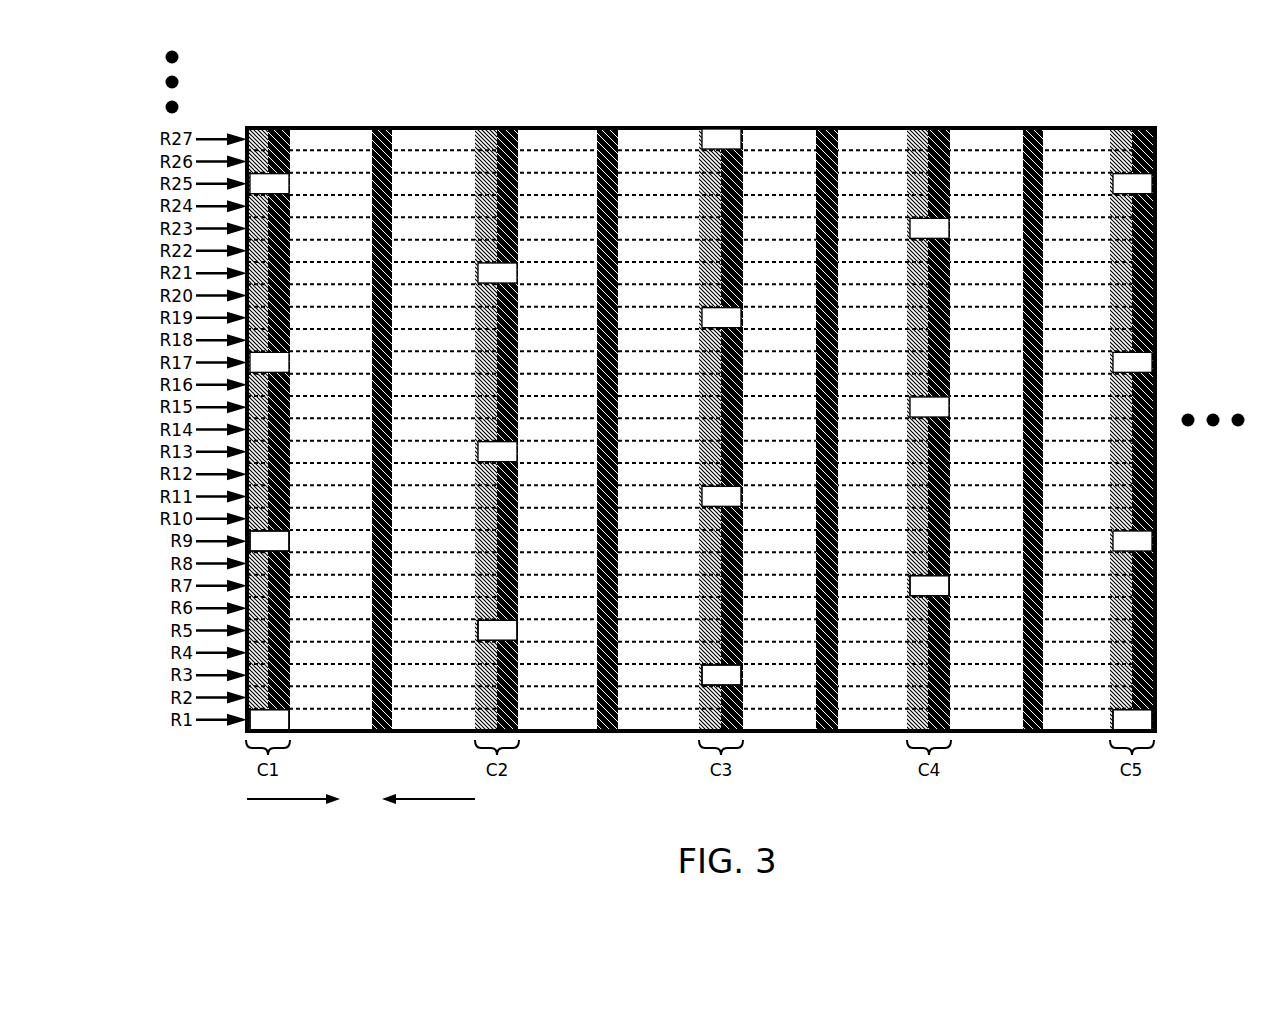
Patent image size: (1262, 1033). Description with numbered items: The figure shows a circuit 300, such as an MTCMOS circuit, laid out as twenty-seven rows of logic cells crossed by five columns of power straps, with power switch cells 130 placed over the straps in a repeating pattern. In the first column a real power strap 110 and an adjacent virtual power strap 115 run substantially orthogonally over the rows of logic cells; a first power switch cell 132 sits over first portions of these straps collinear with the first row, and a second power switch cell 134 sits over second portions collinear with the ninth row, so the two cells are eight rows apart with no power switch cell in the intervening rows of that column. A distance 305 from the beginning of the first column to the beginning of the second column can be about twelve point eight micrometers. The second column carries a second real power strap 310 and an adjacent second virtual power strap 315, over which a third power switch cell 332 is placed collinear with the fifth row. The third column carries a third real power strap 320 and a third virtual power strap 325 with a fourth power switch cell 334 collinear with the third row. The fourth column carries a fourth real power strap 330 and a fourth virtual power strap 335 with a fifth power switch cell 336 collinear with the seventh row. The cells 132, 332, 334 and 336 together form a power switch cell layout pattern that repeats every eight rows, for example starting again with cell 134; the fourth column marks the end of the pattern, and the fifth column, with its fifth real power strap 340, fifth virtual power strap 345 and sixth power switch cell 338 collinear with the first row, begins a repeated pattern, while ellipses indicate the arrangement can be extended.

The real power strap 110 is at (258, 112).
The virtual power strap 115 is at (283, 112).
The power switch cell 130 is at (701, 429).
The first power switch cell 132 is at (308, 720).
The second power switch cell 134 is at (309, 541).
The circuit 300 is at (1195, 164).
The distance 305 is at (361, 799).
The second real power strap 310 is at (483, 112).
The second virtual power strap 315 is at (507, 112).
The third real power strap 320 is at (709, 112).
The third virtual power strap 325 is at (733, 112).
The fourth real power strap 330 is at (915, 112).
The fourth virtual power strap 335 is at (938, 112).
The fifth real power strap 340 is at (1119, 112).
The fifth virtual power strap 345 is at (1143, 112).
The third power switch cell 332 is at (536, 630).
The fourth power switch cell 334 is at (758, 675).
The fifth power switch cell 336 is at (965, 586).
The sixth power switch cell 338 is at (1176, 721).